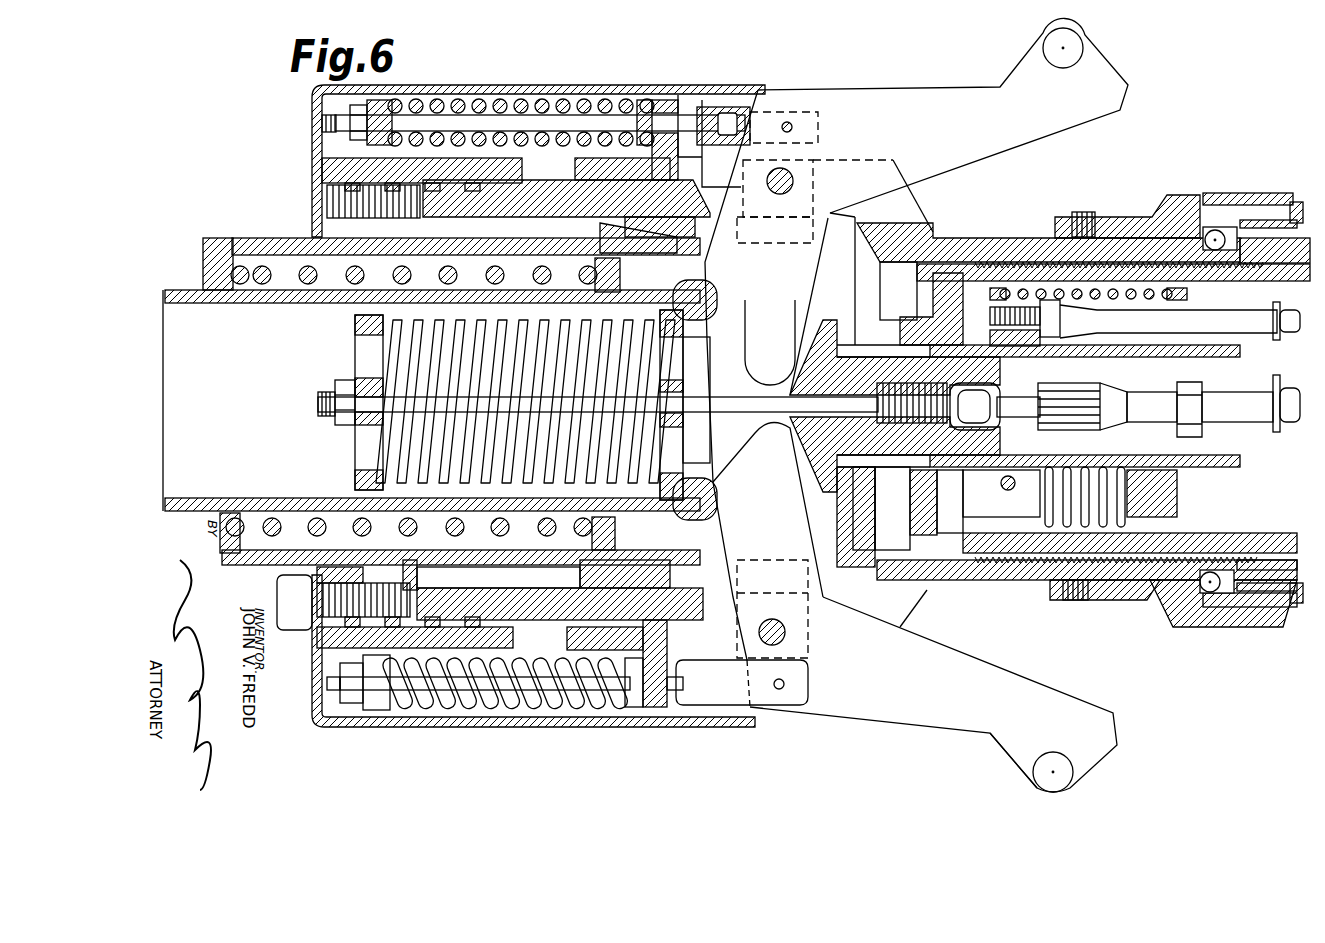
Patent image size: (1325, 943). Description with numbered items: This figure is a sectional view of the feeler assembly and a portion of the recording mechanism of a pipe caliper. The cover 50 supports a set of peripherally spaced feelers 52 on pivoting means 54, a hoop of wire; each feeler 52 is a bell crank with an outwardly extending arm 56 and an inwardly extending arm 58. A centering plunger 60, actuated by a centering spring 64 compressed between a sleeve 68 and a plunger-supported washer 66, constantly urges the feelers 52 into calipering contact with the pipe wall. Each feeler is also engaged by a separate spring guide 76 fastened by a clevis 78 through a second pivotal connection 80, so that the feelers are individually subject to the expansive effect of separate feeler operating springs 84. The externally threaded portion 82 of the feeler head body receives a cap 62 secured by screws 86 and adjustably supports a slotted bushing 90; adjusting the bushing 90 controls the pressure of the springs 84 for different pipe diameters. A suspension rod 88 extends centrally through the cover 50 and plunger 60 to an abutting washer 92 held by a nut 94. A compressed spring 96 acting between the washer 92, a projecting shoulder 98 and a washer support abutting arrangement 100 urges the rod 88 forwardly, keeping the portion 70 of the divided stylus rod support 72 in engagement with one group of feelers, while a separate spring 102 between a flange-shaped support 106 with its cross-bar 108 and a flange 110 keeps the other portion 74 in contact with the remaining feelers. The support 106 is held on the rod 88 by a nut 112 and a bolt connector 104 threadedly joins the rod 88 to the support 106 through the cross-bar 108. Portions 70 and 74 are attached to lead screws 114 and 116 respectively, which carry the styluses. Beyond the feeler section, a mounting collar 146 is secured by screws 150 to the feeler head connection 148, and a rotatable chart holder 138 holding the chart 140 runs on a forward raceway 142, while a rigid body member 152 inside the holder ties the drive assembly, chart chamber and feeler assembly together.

The cover 50 is at (317, 123).
The feelers 52 is at (973, 663).
The pivoting means 54 is at (790, 176).
The outwardly extending arm 56 is at (1022, 748).
The inwardly extending arm 58 is at (773, 527).
The centering plunger 60 is at (169, 290).
The cap 62 is at (330, 167).
The centering spring 64 is at (262, 268).
The washer 66 is at (607, 268).
The sleeve 68 is at (220, 247).
The portion of stylus rod support 70 is at (883, 363).
The stylus rod support 72 is at (810, 343).
The portion of stylus rod support 74 is at (888, 477).
The spring guide 76 is at (685, 150).
The clevis 78 is at (752, 120).
The second pivotal connection 80 is at (792, 124).
The externally threaded portion 82 is at (460, 197).
The feeler operating spring 84 is at (535, 100).
The screws 86 is at (345, 205).
The suspension rod 88 is at (743, 410).
The bushing 90 is at (677, 155).
The abutting washer 92 is at (363, 378).
The nut 94 is at (345, 400).
The spring 96 is at (400, 450).
The projecting shoulder 98 is at (692, 300).
The washer support abutting arrangement 100 is at (670, 360).
The spring 102 is at (1038, 297).
The bolt connector 104 is at (1013, 402).
The support 106 is at (1160, 492).
The cross-bar 108 is at (1157, 395).
The flange 110 is at (983, 560).
The nut 112 is at (1193, 395).
The lead screw 114 is at (1290, 334).
The lead screw 116 is at (1290, 424).
The rotatable chart holder 138 is at (1232, 205).
The chart 140 is at (1290, 225).
The forward raceway 142 is at (1212, 230).
The mounting collar 146 is at (1135, 217).
The feeler head connection 148 is at (993, 237).
The screws 150 is at (1082, 210).
The rigid body member 152 is at (1190, 530).